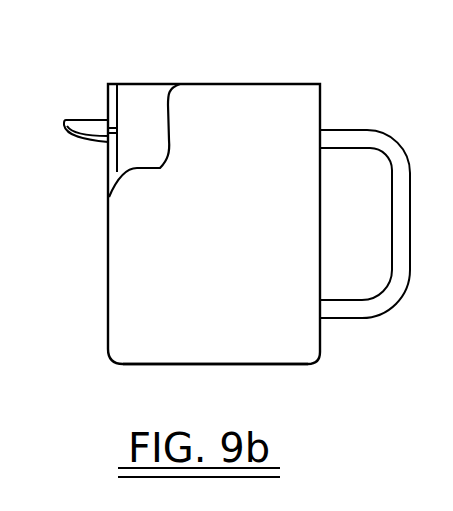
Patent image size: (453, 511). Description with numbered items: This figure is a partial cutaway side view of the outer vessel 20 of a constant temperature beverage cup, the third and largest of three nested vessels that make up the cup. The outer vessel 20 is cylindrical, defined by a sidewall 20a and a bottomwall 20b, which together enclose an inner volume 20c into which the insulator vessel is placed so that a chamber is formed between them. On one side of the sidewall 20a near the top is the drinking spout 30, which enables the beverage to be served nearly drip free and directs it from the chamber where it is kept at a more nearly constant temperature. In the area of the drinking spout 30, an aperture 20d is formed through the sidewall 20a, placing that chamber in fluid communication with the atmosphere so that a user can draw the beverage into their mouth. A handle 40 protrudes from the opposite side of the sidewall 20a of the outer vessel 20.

The outer vessel 20 is at (108, 291).
The sidewall 20a is at (113, 163).
The bottomwall 20b is at (170, 365).
The inner volume 20c is at (143, 112).
The aperture 20d is at (107, 132).
The drinking spout 30 is at (83, 140).
The handle 40 is at (352, 140).